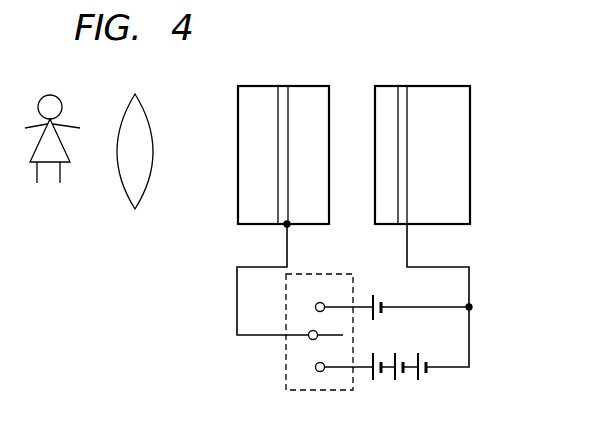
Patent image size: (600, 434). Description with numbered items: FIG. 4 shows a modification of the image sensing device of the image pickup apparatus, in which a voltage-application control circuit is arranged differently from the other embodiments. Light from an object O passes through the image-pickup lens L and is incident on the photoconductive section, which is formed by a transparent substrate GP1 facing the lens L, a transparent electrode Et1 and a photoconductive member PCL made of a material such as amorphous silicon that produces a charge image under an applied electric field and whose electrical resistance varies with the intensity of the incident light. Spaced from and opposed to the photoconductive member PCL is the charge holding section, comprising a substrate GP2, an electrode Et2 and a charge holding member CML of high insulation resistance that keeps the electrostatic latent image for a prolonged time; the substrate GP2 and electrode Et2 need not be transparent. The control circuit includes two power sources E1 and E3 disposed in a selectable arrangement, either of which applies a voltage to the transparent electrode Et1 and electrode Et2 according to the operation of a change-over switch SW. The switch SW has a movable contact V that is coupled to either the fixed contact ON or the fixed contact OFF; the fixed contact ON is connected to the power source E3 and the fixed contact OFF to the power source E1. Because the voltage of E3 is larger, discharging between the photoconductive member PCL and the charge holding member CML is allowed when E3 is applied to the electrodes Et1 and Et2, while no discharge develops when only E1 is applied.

The object O is at (63, 120).
The image-pickup lens L is at (140, 123).
The transparent substrate GP1 is at (248, 107).
The transparent electrode Et1 is at (282, 93).
The photoconductive member PCL is at (310, 94).
The charge holding member CML is at (386, 92).
The electrode Et2 is at (406, 93).
The substrate GP2 is at (460, 124).
The change-over switch SW is at (308, 311).
The fixed contact off OFF is at (315, 303).
The movable contact V is at (327, 333).
The fixed contact on ON is at (315, 364).
The power source E1 is at (377, 294).
The power source E3 is at (428, 386).